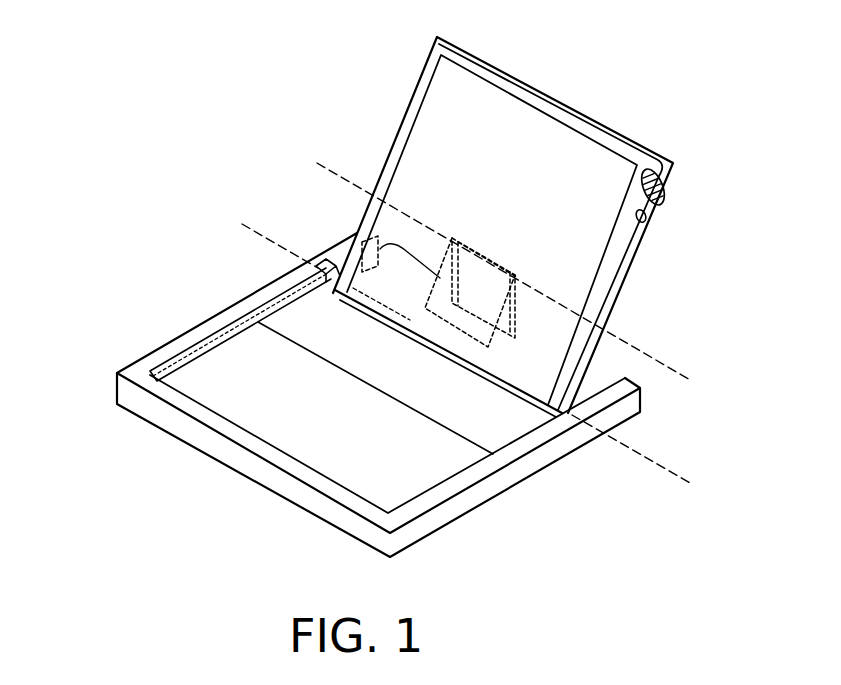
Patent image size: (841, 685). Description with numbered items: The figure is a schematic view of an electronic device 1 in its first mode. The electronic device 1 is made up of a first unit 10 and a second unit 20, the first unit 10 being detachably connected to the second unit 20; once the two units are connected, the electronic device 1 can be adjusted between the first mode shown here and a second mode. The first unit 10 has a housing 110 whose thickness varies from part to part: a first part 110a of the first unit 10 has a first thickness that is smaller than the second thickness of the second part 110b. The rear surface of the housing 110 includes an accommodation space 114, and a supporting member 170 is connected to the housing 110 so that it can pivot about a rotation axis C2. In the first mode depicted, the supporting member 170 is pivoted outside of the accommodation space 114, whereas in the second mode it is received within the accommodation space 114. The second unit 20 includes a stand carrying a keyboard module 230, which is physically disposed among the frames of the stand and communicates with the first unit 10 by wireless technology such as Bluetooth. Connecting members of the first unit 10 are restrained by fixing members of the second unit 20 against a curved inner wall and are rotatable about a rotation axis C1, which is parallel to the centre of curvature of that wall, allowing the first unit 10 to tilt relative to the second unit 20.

The electronic device 1 is at (146, 197).
The first unit 10 is at (399, 76).
The housing 110 is at (594, 120).
The first part 110a is at (596, 378).
The second part 110b is at (621, 298).
The accommodation space 114 is at (330, 250).
The supporting member 170 is at (518, 301).
The second unit 20 is at (118, 341).
The keyboard module 230 is at (387, 478).
The rotation axis C1 is at (488, 366).
The rotation axis C2 is at (525, 286).